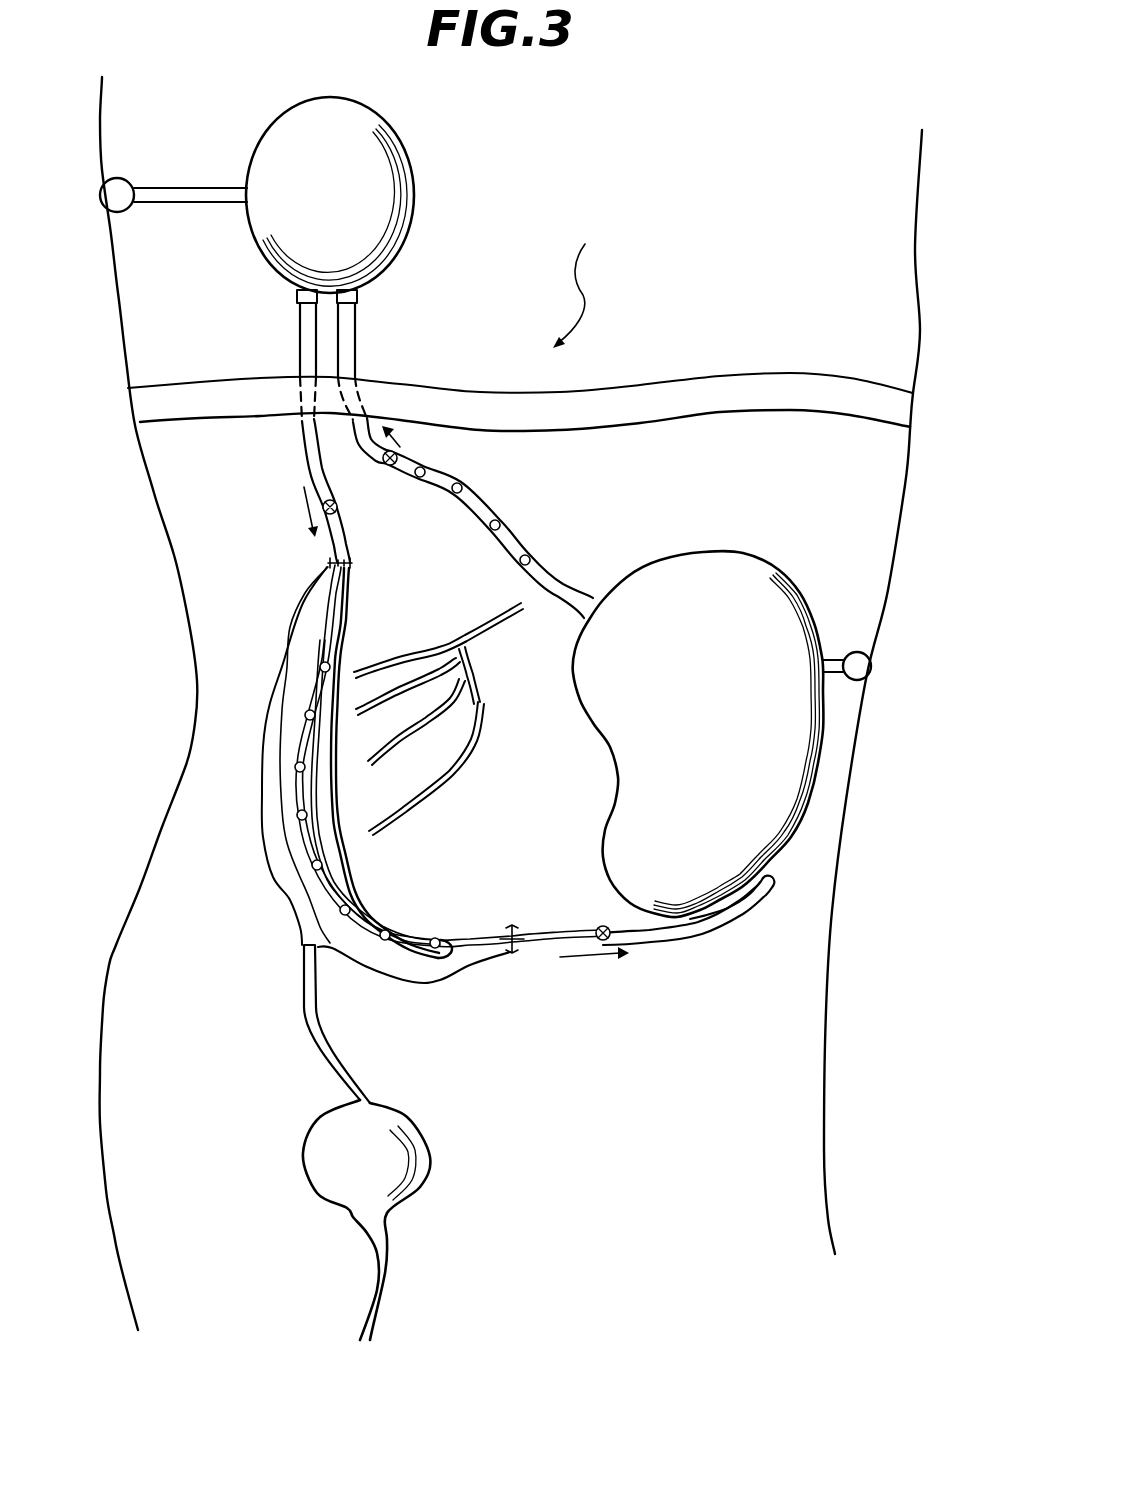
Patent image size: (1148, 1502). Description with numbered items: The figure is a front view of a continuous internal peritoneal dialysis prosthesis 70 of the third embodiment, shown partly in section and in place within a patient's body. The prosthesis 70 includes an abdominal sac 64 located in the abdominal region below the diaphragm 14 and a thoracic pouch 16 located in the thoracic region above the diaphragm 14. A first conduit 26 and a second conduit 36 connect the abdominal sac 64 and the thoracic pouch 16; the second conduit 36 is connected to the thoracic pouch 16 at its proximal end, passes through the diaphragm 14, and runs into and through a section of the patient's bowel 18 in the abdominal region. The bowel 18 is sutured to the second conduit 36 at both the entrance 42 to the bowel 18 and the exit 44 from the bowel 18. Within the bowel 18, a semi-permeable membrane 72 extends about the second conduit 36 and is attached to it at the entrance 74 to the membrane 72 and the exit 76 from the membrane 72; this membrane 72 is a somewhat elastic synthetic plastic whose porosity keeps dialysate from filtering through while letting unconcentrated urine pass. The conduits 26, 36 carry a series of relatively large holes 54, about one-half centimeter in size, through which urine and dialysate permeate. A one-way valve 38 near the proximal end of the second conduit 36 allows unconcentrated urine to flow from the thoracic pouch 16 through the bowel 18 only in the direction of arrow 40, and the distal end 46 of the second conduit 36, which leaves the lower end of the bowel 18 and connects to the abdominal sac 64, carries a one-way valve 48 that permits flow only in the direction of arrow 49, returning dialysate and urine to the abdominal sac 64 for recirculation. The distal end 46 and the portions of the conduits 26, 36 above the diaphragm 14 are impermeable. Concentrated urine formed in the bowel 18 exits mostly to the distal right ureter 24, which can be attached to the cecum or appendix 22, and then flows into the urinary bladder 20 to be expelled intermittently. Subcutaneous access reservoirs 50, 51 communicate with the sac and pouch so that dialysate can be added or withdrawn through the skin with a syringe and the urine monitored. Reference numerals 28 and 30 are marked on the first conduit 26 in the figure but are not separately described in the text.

The diaphragm 14 is at (692, 403).
The thoracic pouch 16 is at (380, 192).
The section of patient's bowel 18 is at (360, 866).
The urinary bladder 20 is at (432, 1145).
The cecum or appendix 22 is at (303, 992).
The distal right ureter 24 is at (360, 1068).
The conduit 26 is at (357, 351).
The inflow conduit valve 28 is at (386, 462).
The flow direction in inflow conduit 30 is at (436, 460).
The second conduit 36 is at (295, 323).
The one-way valve 38 is at (337, 507).
The arrow 40 is at (298, 500).
The entrance to the bowel 42 is at (350, 559).
The exit from the bowel 44 is at (513, 938).
The distal end of second conduit 46 is at (738, 926).
The one-way valve 48 is at (604, 930).
The arrow 49 is at (581, 958).
The subcutaneous access reservoir 50 is at (122, 180).
The subcutaneous access reservoir 51 is at (866, 653).
The holes 54 is at (388, 932).
The abdominal sac 64 is at (737, 550).
The continuous internal peritoneal dialysis prosthesis 70 is at (584, 278).
The semi-permeable membrane 72 is at (290, 860).
The entrance to the membrane 74 is at (350, 647).
The exit from the membrane 76 is at (462, 952).